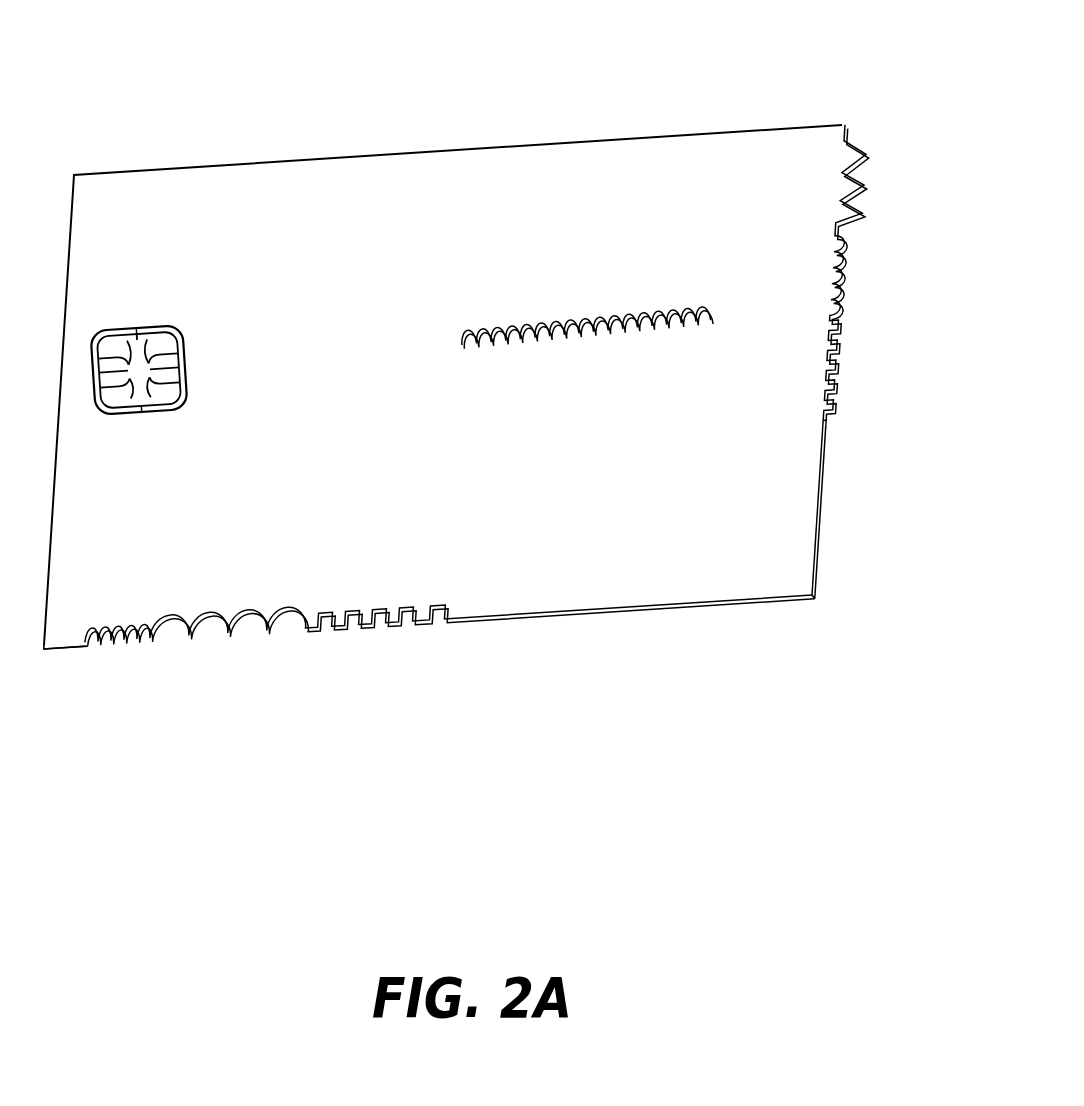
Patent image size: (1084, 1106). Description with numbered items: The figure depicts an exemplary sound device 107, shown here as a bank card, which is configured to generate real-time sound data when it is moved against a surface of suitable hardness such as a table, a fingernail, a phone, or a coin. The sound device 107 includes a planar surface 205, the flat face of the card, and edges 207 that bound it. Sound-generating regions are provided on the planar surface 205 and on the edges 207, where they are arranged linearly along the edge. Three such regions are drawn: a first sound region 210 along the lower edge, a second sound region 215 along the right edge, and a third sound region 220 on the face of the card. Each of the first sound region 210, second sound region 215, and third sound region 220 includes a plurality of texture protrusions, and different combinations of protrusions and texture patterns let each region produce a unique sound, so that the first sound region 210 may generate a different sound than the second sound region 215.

The sound device 107 is at (419, 118).
The planar surface 205 is at (634, 582).
The edge 207 is at (850, 575).
The first sound region 210 is at (312, 664).
The second sound region 215 is at (915, 252).
The third sound region 220 is at (612, 296).